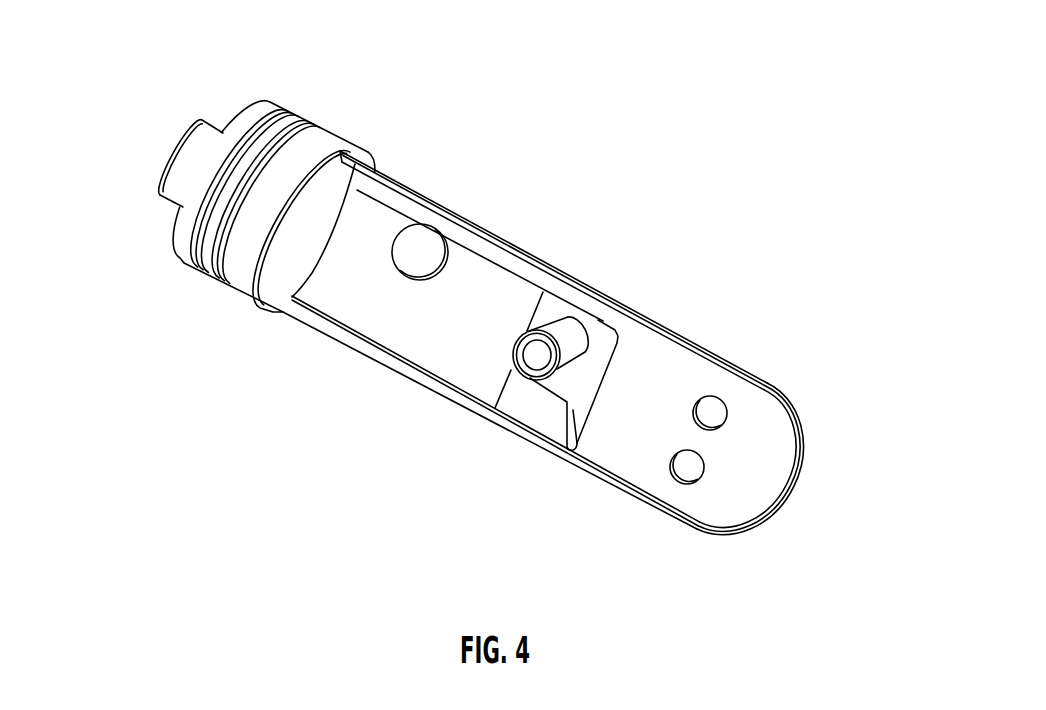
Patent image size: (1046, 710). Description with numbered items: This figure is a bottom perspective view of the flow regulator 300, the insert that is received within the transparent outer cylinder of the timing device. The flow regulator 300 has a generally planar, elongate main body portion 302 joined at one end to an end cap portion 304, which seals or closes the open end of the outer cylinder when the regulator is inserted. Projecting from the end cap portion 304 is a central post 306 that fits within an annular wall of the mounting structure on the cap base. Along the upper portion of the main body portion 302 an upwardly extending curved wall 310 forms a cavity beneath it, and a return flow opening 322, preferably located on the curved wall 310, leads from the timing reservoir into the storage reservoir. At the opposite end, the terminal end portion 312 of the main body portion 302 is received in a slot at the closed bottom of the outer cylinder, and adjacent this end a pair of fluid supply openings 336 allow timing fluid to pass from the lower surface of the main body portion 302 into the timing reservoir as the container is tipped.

The flow regulator 300 is at (644, 256).
The main body portion 302 is at (429, 390).
The end cap portion 304 is at (283, 104).
The central post 306 is at (177, 181).
The curved wall 310 is at (475, 270).
The terminal end portion 312 is at (776, 493).
The return flow opening 322 is at (540, 360).
The fluid supply openings 336 is at (725, 411).